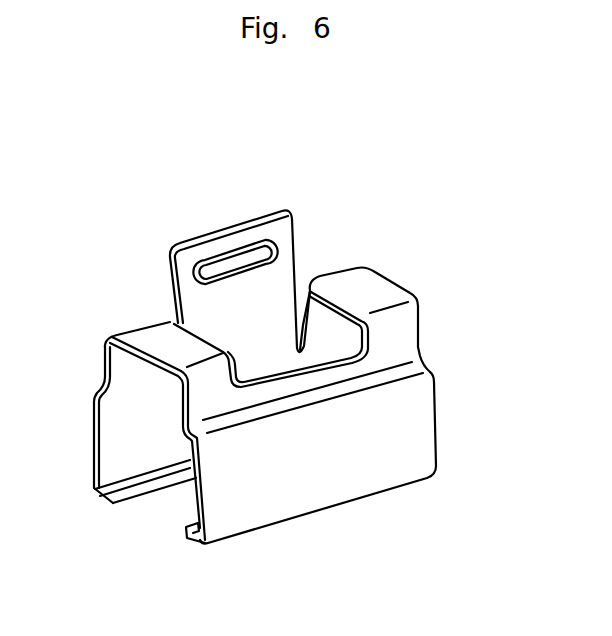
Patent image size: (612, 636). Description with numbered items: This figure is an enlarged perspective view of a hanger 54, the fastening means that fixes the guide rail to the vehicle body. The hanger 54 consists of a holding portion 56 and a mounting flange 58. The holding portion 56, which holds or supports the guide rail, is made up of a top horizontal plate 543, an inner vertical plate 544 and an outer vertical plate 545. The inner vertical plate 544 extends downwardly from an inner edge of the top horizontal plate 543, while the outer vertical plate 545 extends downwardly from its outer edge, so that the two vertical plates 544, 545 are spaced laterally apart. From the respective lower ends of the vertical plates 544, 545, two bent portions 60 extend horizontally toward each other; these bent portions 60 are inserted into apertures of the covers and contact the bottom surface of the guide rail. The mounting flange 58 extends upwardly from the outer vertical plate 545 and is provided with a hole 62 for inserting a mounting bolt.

The hanger 54 is at (272, 383).
The holding portion 56 is at (420, 394).
The mounting flange 58 is at (260, 261).
The bent portions 60 is at (133, 483).
The hole 62 is at (247, 257).
The top horizontal plate 543 is at (368, 288).
The inner vertical plate 544 is at (358, 445).
The outer vertical plate 545 is at (113, 440).